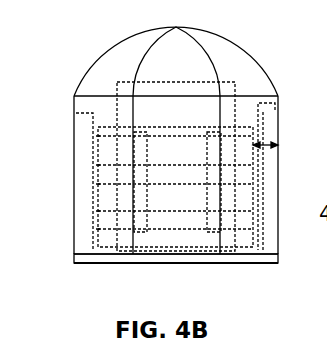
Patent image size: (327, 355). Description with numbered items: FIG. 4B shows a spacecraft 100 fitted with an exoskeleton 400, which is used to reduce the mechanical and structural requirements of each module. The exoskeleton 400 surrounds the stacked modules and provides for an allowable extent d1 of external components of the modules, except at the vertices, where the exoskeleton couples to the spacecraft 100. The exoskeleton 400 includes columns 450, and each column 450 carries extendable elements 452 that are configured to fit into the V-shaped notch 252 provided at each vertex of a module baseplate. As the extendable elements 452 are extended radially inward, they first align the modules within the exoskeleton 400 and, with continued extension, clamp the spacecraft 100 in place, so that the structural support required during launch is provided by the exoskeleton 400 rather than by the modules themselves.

The exoskeleton 400 is at (75, 232).
The column 450 is at (85, 123).
The extendable element 452 is at (92, 113).
The V-shaped notch 252 is at (103, 137).
The spacecraft 100 is at (245, 235).
The allowable extent of external components d1 is at (278, 143).